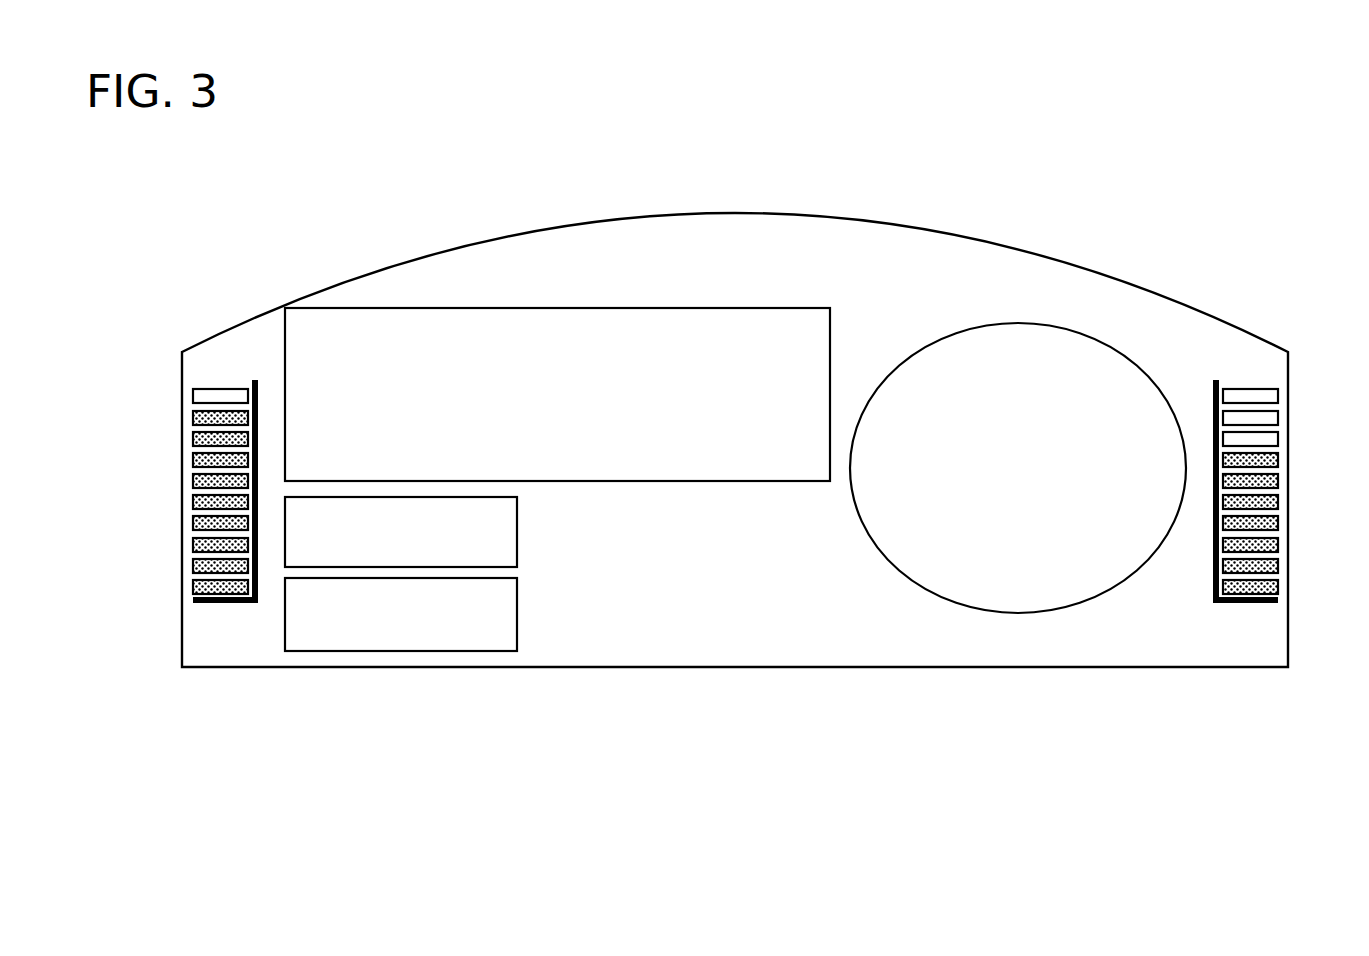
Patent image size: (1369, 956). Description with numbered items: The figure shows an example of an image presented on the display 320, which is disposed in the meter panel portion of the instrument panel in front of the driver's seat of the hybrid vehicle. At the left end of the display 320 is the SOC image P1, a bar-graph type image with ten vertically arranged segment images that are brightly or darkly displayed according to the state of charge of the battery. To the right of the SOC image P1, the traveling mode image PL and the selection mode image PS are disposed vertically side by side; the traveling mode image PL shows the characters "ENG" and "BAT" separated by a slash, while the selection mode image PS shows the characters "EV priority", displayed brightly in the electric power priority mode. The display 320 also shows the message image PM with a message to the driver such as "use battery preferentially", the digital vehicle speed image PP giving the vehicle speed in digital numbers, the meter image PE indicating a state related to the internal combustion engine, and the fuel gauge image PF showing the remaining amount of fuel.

The display 320 is at (1011, 203).
The SOC image P1 is at (212, 368).
The fuel gauge image PF is at (1261, 368).
The digital vehicle speed image PP is at (722, 247).
The message image PM is at (557, 308).
The traveling mode image PL is at (518, 531).
The selection mode image PS is at (518, 614).
The meter image PE is at (1017, 323).